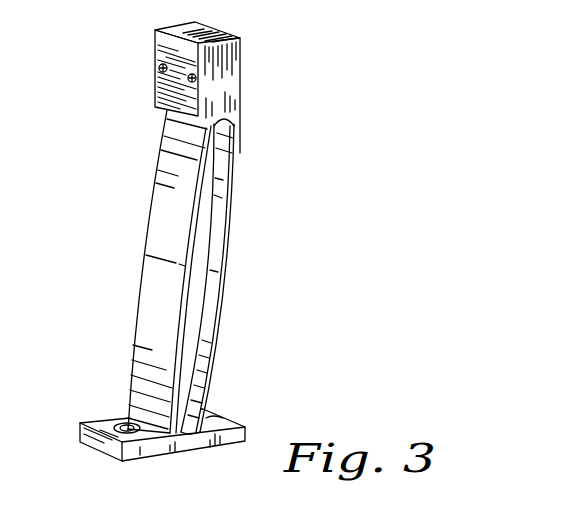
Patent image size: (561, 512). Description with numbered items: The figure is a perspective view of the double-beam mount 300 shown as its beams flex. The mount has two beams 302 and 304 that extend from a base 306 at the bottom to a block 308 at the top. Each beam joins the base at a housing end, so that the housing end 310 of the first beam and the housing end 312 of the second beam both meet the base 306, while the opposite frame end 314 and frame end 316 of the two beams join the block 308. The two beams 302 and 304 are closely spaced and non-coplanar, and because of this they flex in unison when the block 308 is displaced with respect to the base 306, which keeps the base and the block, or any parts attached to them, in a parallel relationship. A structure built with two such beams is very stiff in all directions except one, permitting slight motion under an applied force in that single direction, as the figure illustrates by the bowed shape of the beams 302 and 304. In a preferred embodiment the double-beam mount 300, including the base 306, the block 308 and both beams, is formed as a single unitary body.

The double-beam mount 300 is at (283, 203).
The beam 302 is at (155, 228).
The beam 304 is at (200, 274).
The base 306 is at (190, 447).
The block 308 is at (239, 87).
The housing end 310 is at (140, 402).
The housing end 312 is at (209, 377).
The frame end 314 is at (180, 123).
The frame end 316 is at (240, 150).